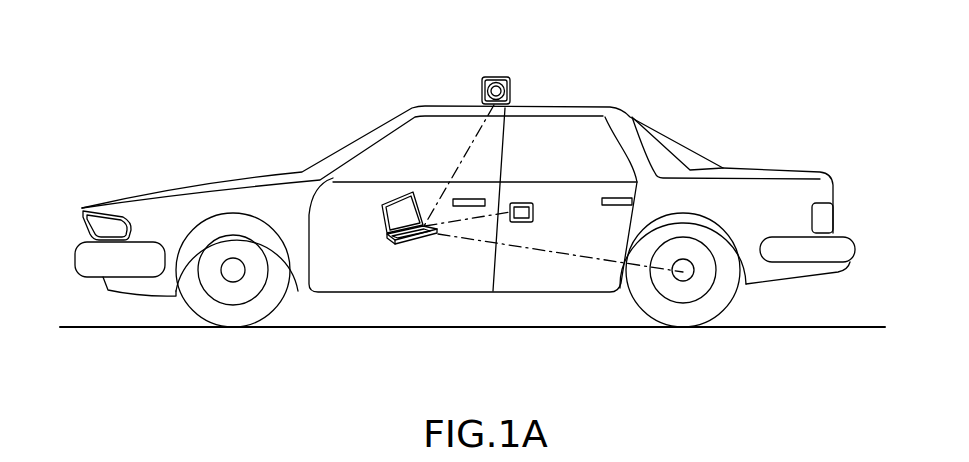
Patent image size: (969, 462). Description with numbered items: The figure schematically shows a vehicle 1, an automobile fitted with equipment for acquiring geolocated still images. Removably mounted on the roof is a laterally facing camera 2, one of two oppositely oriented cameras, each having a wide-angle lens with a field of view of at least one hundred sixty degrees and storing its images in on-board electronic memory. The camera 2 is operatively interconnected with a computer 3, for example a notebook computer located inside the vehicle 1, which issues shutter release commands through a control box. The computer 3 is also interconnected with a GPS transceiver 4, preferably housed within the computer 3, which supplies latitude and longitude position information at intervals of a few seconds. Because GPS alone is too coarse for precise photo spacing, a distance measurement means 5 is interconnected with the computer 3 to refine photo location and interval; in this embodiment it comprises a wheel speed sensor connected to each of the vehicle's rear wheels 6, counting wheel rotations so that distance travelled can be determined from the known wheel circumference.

The vehicle 1 is at (240, 182).
The camera 2 is at (497, 78).
The computer 3 is at (390, 200).
The GPS transceiver 4 is at (527, 203).
The distance measurement means 5 is at (632, 310).
The rear wheel 6 is at (718, 297).